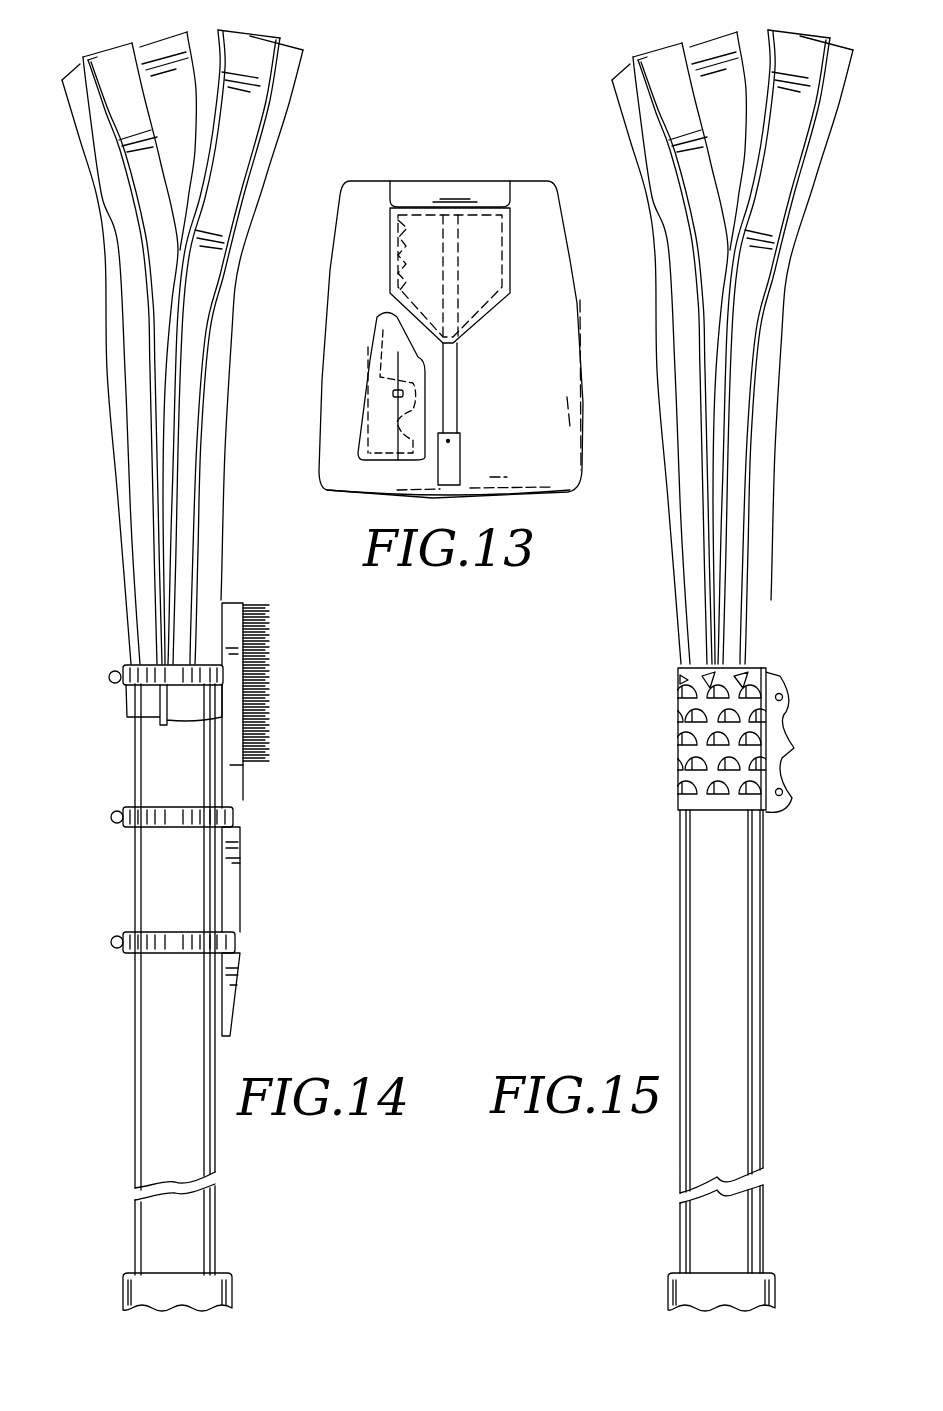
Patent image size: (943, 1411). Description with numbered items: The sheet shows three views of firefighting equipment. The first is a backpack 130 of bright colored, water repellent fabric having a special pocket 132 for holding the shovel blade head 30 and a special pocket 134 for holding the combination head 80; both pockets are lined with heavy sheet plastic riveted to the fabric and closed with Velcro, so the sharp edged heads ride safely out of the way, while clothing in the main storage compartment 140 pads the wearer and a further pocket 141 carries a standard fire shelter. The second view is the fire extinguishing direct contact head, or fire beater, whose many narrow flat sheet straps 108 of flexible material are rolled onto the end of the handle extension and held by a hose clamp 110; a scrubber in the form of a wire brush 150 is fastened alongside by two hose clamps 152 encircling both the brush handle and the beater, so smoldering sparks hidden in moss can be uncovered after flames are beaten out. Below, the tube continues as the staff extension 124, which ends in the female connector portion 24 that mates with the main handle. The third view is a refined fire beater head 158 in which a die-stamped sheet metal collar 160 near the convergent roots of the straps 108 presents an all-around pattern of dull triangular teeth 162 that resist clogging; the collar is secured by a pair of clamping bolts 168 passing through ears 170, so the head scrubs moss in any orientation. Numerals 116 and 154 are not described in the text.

In FIG. 14, the female connector portion 24 is at (123, 1288).
In FIG. 15, the female connector portion 24 is at (773, 1292).
In FIG. 13, the shovel blade head 30 is at (492, 303).
In FIG. 13, the combination head 80 is at (364, 388).
In FIG. 14, the flat sheet straps 108 is at (286, 42).
In FIG. 15, the flat sheet straps 108 is at (622, 62).
In FIG. 14, the hose clamp 110 is at (118, 675).
In FIG. 14, the strand ends 116 is at (188, 708).
In FIG. 14, the staff extension 124 is at (133, 1067).
In FIG. 15, the staff extension 124 is at (763, 1097).
In FIG. 13, the backpack 130 is at (447, 160).
In FIG. 13, the special pocket 132 is at (483, 218).
In FIG. 13, the special pocket 134 is at (360, 452).
In FIG. 13, the main storage compartment 140 is at (533, 483).
In FIG. 13, the pocket 141 is at (413, 180).
In FIG. 14, the wire brush 150 is at (232, 773).
In FIG. 14, the hose clamps 152 is at (115, 818).
In FIG. 14, the scraper 154 is at (232, 888).
In FIG. 15, the fire extinguishing direct contact head 158 is at (790, 535).
In FIG. 15, the sheet metal collar 160 is at (792, 740).
In FIG. 15, the triangular teeth 162 is at (676, 797).
In FIG. 15, the clamping bolts 168 is at (784, 698).
In FIG. 15, the ears 170 is at (778, 807).